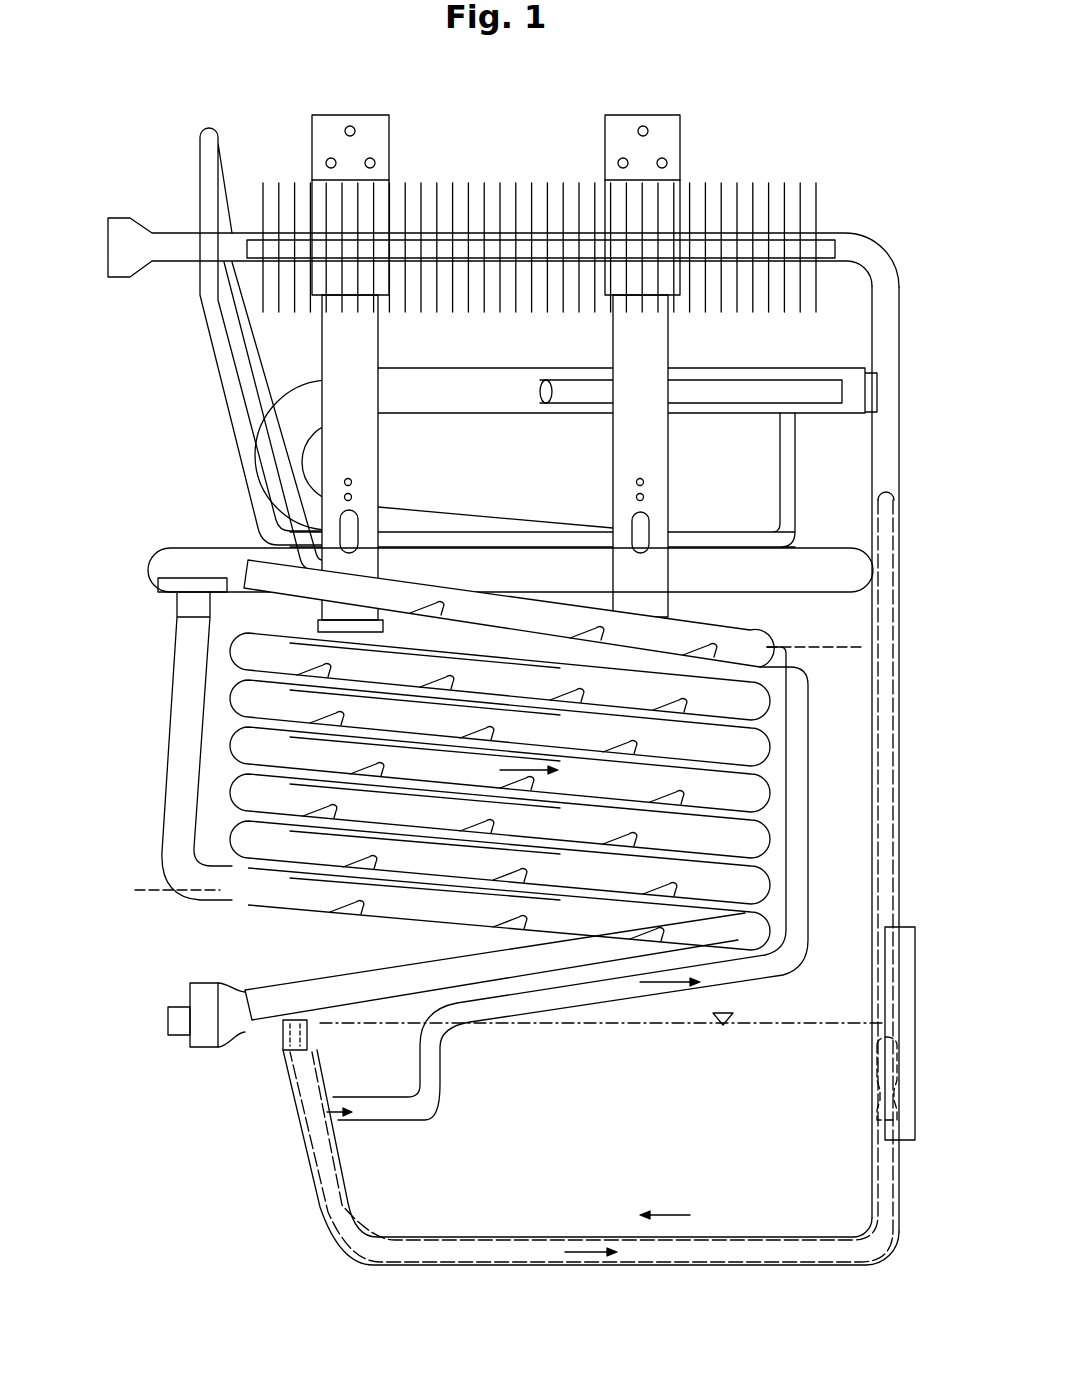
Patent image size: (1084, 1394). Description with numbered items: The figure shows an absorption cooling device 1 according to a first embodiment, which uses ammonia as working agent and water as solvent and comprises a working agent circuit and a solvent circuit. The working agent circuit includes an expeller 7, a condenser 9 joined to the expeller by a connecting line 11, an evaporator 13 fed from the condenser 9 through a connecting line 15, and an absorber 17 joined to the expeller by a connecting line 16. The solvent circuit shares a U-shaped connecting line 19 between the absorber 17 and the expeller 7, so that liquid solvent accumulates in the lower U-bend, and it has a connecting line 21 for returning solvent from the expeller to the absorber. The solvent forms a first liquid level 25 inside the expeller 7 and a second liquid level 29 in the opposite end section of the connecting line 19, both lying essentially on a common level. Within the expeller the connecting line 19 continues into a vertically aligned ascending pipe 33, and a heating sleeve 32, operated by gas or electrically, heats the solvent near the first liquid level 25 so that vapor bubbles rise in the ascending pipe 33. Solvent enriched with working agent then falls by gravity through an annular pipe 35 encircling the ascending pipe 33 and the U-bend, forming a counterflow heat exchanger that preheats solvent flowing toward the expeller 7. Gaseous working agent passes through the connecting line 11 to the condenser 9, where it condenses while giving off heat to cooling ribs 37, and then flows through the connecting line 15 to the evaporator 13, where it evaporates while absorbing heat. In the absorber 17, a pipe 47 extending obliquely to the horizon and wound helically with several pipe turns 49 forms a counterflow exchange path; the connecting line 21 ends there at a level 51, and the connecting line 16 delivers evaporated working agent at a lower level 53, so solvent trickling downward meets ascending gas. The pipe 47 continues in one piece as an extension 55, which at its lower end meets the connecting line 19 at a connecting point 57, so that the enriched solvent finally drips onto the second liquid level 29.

The absorption cooling device 1 is at (218, 1228).
The expeller 7 is at (918, 1068).
The condenser 9 is at (816, 192).
The connecting line 11 is at (900, 310).
The evaporator 13 is at (803, 370).
The connecting line 15 is at (230, 425).
The connecting line 16 is at (175, 652).
The absorber 17 is at (222, 718).
The connecting line 19 is at (287, 1047).
The connecting line 21 is at (763, 977).
The first liquid level 25 is at (885, 1023).
The second liquid level 29 is at (283, 1018).
The heating sleeve 32 is at (915, 1123).
The ascending pipe 33 is at (897, 767).
The annular pipe 35 is at (897, 635).
The cooling ribs 37 is at (545, 183).
The pipe 47 is at (230, 748).
The pipe turns 49 is at (230, 835).
The level 51 is at (820, 645).
The level 53 is at (135, 889).
The extension 55 is at (357, 904).
The connecting point 57 is at (307, 1017).